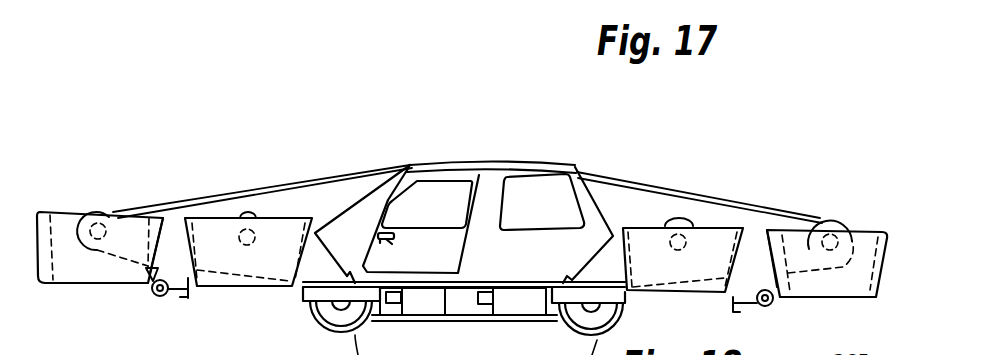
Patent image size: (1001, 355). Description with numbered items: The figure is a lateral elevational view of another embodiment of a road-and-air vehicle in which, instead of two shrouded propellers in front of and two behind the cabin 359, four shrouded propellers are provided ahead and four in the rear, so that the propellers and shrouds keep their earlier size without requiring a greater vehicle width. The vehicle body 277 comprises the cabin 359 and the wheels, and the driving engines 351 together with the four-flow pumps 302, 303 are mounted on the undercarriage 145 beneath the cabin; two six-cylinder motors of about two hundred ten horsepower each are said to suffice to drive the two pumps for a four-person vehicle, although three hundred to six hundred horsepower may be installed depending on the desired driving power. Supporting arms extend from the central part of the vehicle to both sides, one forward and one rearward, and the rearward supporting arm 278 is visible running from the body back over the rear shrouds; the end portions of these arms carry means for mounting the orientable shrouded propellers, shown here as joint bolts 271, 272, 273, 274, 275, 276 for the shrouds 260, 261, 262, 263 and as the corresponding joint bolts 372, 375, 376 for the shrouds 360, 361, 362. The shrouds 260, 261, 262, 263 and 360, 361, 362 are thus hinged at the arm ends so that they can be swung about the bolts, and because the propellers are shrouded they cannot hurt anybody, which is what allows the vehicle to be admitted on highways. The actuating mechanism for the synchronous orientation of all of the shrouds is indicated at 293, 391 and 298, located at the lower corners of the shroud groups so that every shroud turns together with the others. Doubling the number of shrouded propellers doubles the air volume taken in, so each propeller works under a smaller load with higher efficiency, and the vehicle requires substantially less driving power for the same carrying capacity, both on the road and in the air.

The undercarriage 145 is at (533, 321).
The shroud 260 is at (193, 237).
The shroud 261 is at (248, 280).
The shroud 262 is at (740, 232).
The shroud 263 is at (682, 285).
The joint bolt 271 is at (175, 168).
The joint bolt 272 is at (666, 179).
The joint bolt 273 is at (98, 228).
The joint bolt 274 is at (245, 228).
The joint bolt 275 is at (668, 175).
The joint bolt 276 is at (675, 233).
The vehicle body 277 is at (174, 237).
The rear tension cables 278 is at (753, 242).
The actuating mechanism 293 is at (182, 296).
The actuating mechanism 298 is at (162, 297).
The four-flow pump 302 is at (397, 306).
The four-flow pump 303 is at (487, 306).
The driving engine 351 is at (512, 302).
The cabin 359 is at (418, 202).
The shroud 360 is at (50, 245).
The shroud 361 is at (99, 280).
The shroud 362 is at (870, 268).
The joint bolt 372 is at (838, 191).
The joint bolt 375 is at (830, 200).
The joint bolt 376 is at (832, 234).
The actuating mechanism 391 is at (147, 277).